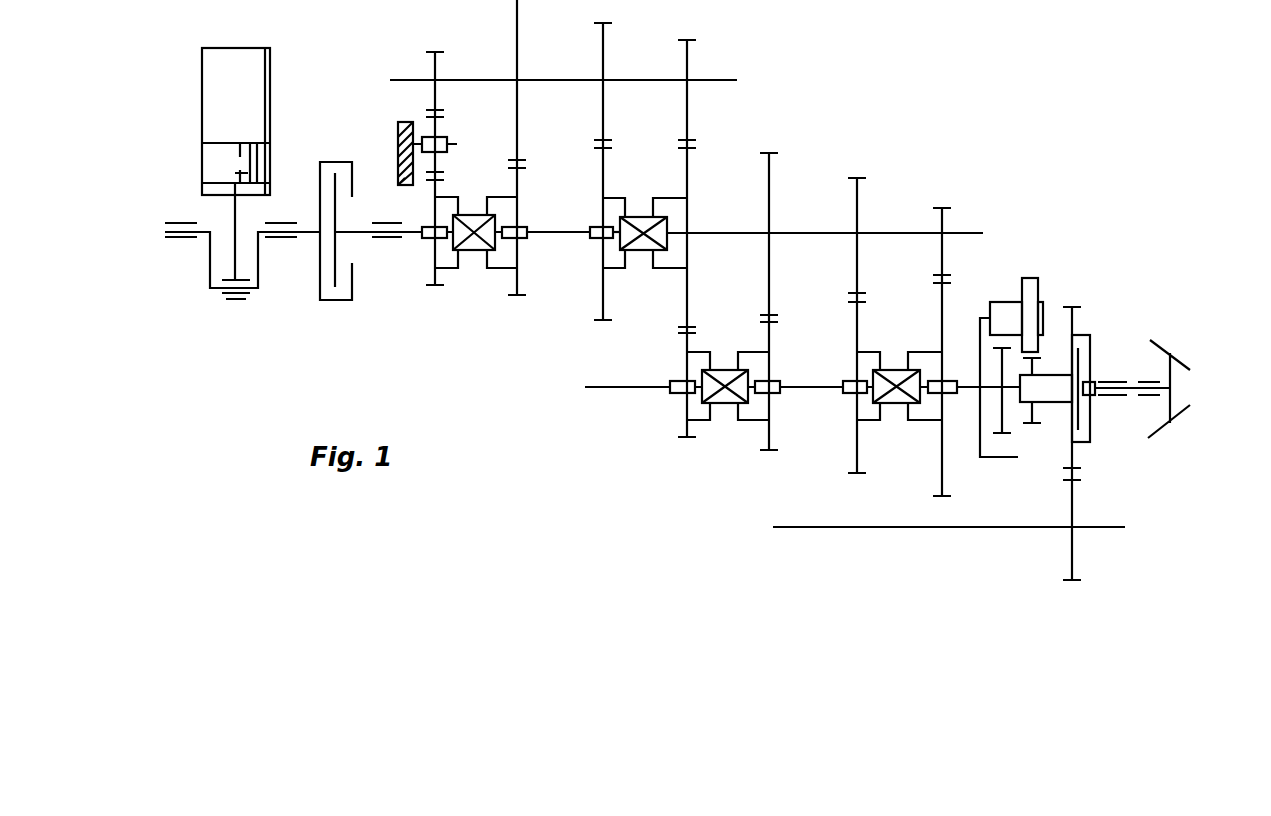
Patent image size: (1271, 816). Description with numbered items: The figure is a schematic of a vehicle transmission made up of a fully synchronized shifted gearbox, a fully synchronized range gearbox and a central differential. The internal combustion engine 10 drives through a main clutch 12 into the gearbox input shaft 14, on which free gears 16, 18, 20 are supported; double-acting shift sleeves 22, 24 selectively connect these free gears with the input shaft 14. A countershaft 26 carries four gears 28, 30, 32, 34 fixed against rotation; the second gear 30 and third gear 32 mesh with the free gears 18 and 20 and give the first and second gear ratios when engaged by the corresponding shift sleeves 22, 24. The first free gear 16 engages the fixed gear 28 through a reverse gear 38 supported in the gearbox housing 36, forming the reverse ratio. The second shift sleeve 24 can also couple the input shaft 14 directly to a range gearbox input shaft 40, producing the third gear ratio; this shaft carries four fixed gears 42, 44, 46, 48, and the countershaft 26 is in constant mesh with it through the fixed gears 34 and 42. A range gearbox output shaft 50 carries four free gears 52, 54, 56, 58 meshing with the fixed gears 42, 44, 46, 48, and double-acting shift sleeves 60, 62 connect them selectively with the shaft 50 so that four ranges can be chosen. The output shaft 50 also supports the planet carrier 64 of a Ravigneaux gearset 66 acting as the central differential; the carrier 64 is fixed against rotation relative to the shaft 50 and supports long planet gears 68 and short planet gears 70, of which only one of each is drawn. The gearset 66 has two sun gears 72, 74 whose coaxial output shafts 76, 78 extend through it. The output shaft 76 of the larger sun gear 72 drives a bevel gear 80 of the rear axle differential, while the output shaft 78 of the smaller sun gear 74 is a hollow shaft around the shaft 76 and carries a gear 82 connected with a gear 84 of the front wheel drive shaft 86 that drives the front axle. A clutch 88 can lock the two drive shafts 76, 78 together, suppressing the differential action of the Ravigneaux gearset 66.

The internal combustion engine 10 is at (217, 92).
The main clutch 12 is at (330, 302).
The gearbox input shaft 14 is at (417, 235).
The first free gear 16 is at (427, 270).
The free gear 18 is at (515, 290).
The free gear 20 is at (603, 305).
The double-acting shift sleeve 22 is at (475, 250).
The second shift sleeve 24 is at (643, 250).
The countershaft 26 is at (412, 78).
The fixed gear 28 is at (440, 68).
The second gear 30 is at (517, 17).
The third gear 32 is at (603, 57).
The fixed gear 34 is at (690, 60).
The gearbox housing 36 is at (398, 125).
The reverse gear 38 is at (437, 130).
The range gearbox input shaft 40 is at (983, 235).
The fixed gear 42 is at (688, 162).
The fixed gear 44 is at (771, 172).
The fixed gear 46 is at (858, 203).
The fixed gear 48 is at (944, 222).
The range gearbox output shaft 50 is at (963, 383).
The free gear 52 is at (680, 408).
The free gear 54 is at (765, 432).
The free gear 56 is at (857, 450).
The free gear 58 is at (940, 472).
The double-acting shift sleeve 60 is at (725, 370).
The double-acting shift sleeve 62 is at (900, 403).
The planet carrier 64 is at (1018, 457).
The Ravigneaux gearset 66 is at (1043, 285).
The long planet gears 68 is at (1000, 308).
The short planet gears 70 is at (1027, 278).
The larger sun gear 72 is at (998, 428).
The smaller sun gear 74 is at (1032, 425).
The output shaft 76 is at (1133, 392).
The output shaft 78 is at (1057, 373).
The bevel gear 80 is at (1172, 355).
The gear 82 is at (1077, 322).
The gear 84 is at (1075, 555).
The front wheel drive shaft 86 is at (833, 527).
The clutch 88 is at (1088, 418).